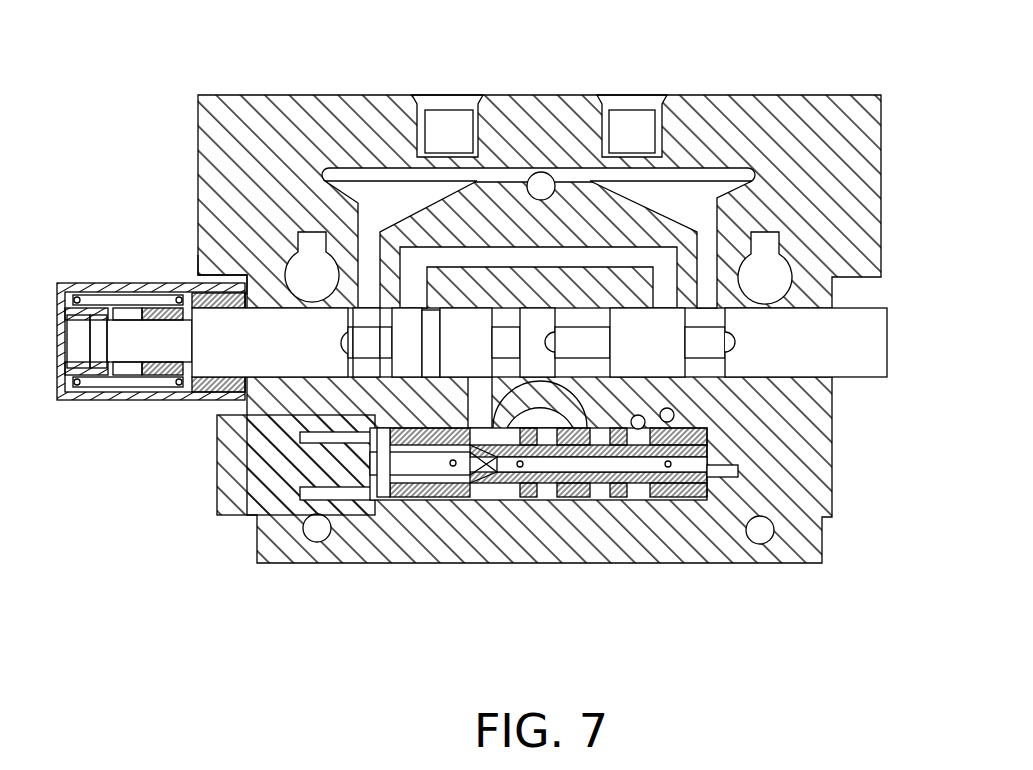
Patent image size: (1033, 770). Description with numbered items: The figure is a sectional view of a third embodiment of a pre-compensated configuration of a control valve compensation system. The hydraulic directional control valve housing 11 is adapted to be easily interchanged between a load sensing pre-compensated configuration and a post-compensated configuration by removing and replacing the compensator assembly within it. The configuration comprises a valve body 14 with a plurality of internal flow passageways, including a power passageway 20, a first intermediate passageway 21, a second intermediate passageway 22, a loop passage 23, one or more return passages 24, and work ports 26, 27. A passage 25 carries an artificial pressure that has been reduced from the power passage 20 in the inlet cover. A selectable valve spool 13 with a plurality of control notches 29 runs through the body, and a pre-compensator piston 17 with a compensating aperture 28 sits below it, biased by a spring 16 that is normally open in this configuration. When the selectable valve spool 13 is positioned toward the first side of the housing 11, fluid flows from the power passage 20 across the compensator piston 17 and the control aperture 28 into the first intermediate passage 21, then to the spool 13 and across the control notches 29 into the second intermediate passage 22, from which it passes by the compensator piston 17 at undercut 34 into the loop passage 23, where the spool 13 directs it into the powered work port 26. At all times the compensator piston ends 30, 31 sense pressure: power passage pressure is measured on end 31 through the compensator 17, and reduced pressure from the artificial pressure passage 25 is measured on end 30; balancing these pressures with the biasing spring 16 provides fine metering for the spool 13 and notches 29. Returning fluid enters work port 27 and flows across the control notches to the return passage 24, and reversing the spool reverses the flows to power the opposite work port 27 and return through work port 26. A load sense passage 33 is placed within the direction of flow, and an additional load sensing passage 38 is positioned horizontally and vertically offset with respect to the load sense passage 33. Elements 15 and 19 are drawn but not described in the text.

The hydraulic directional control valve housing 11 is at (355, 118).
The selectable valve spool 13 is at (888, 340).
The valve body 14 is at (198, 262).
The end cap 15 is at (217, 465).
The spring 16 is at (383, 455).
The pre-compensator piston 17 is at (690, 540).
The actuator 19 is at (62, 400).
The power passageway 20 is at (540, 500).
The first intermediate passageway 21 is at (478, 500).
The second intermediate passageway 22 is at (605, 500).
The loop passage 23 is at (690, 225).
The return passage 24 is at (450, 298).
The artificial pressure passage 25 is at (420, 505).
The work port 26 is at (440, 97).
The work port 27 is at (630, 97).
The compensating aperture 28 is at (497, 500).
The control notches 29 is at (512, 300).
The compensator piston end 30 is at (340, 500).
The compensator piston end 31 is at (738, 478).
The load sense passage 33 is at (707, 455).
The undercut 34 is at (635, 500).
The load sensing passage 38 is at (672, 415).